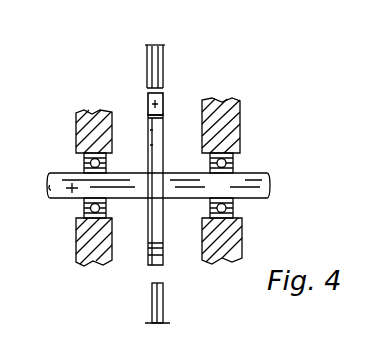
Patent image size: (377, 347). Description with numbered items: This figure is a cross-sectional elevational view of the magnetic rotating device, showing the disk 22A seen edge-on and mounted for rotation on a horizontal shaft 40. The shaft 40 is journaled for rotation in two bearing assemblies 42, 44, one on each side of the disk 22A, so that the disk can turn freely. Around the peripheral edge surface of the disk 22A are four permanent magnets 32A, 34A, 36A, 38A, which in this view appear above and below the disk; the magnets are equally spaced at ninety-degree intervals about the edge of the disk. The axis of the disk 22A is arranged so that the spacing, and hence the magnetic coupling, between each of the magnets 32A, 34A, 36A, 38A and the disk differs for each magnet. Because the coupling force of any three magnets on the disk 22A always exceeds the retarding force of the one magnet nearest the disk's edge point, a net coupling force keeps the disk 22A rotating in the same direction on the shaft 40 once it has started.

The disk 22A is at (165, 107).
The permanent magnet 32A is at (165, 58).
The permanent magnet 34A is at (103, 213).
The permanent magnet 38A is at (147, 205).
The permanent magnet 36A is at (166, 302).
The shaft 40 is at (72, 196).
The bearing assembly 42 is at (84, 162).
The bearing assembly 44 is at (233, 162).